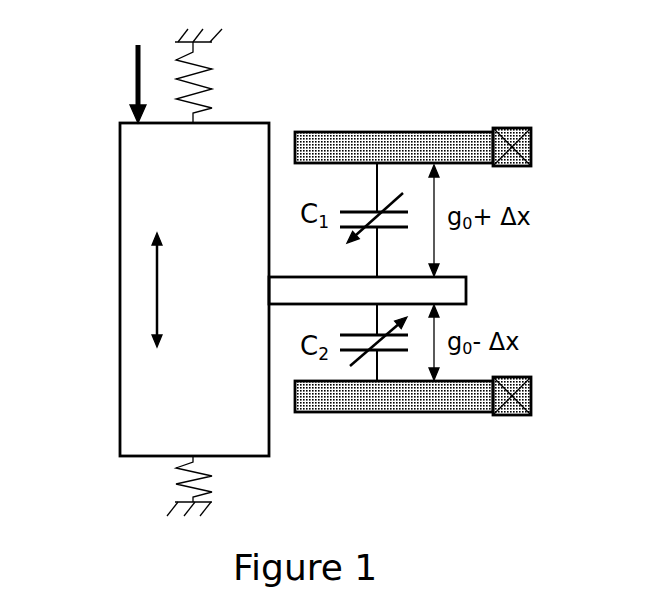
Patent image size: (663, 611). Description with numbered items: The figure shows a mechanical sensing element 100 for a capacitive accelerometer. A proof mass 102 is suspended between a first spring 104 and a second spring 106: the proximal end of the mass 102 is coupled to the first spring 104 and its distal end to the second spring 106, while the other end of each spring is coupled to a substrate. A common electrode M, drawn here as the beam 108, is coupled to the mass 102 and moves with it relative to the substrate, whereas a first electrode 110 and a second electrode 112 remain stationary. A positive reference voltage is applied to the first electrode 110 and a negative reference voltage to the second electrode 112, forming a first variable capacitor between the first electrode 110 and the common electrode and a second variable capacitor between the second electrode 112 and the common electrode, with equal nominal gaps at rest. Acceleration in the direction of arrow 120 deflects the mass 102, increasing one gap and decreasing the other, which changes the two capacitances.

The mechanical sensing element 100 is at (424, 62).
The proof mass 102 is at (121, 245).
The first spring 104 is at (232, 486).
The second spring 106 is at (224, 82).
The movable electrode beam 108 is at (467, 277).
The first electrode 110 is at (440, 140).
The second electrode 112 is at (415, 405).
The arrow 120 is at (111, 84).